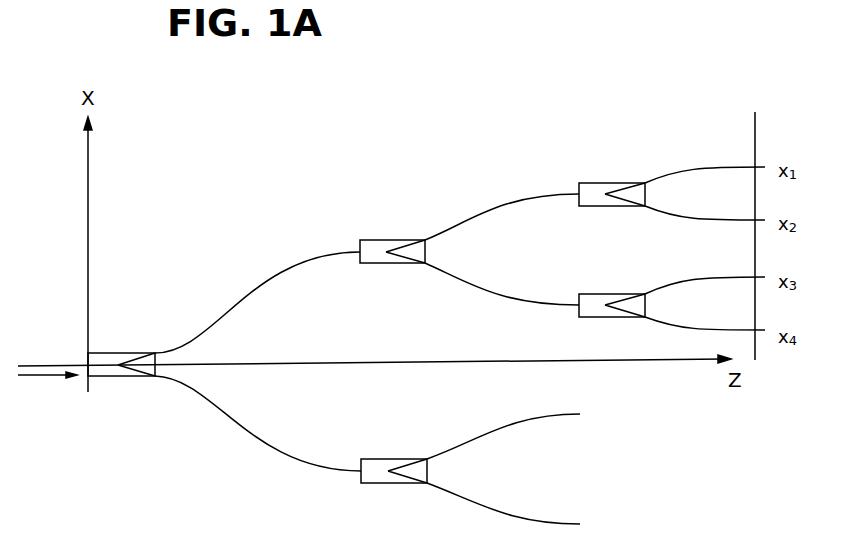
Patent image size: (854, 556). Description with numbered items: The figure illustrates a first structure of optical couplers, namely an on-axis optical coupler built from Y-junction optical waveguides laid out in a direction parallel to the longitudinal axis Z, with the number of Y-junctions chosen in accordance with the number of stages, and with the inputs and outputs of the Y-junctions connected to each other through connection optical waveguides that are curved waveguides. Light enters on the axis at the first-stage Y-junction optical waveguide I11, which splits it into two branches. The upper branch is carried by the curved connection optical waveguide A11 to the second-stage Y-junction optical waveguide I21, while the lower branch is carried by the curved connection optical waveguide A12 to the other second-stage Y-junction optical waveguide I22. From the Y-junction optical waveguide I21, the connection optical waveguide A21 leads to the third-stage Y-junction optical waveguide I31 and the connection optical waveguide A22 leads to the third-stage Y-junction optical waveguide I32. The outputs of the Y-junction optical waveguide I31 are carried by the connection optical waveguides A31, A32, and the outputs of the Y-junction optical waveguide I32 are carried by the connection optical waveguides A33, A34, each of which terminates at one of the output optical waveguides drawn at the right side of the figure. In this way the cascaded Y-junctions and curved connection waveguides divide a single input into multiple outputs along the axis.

The Y-junction optical waveguide I11 is at (121, 383).
The Y-junction optical waveguide I21 is at (392, 268).
The Y-junction optical waveguide I22 is at (470, 469).
The Y-junction optical waveguide I31 is at (612, 179).
The Y-junction optical waveguide I32 is at (612, 290).
The connection optical waveguide A11 is at (257, 301).
The connection optical waveguide A12 is at (258, 427).
The connection optical waveguide A21 is at (502, 205).
The connection optical waveguide A22 is at (502, 296).
The connection optical waveguide A31 is at (705, 159).
The connection optical waveguide A32 is at (705, 205).
The connection optical waveguide A33 is at (705, 270).
The connection optical waveguide A34 is at (705, 316).